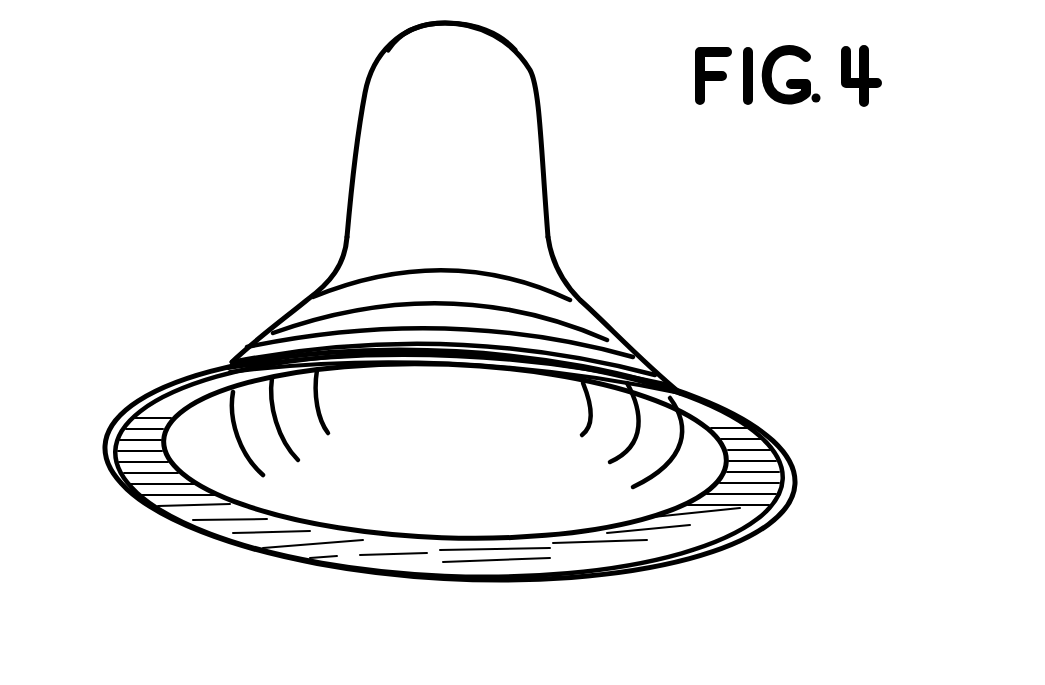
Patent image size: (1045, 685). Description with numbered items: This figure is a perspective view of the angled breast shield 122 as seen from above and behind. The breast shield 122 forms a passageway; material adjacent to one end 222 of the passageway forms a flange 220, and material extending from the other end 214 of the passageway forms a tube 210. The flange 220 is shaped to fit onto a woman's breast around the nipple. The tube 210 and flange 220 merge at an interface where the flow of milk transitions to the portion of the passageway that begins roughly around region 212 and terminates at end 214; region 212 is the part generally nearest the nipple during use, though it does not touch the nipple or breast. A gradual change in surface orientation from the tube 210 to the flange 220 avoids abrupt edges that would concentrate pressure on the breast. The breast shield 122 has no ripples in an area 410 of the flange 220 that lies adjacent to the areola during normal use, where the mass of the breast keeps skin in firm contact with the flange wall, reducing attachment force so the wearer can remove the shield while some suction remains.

The breast shield 122 is at (119, 267).
The tube 210 is at (326, 118).
The end 214 is at (507, 35).
The region 212 is at (590, 264).
The flange 220 is at (820, 577).
The end 222 is at (199, 537).
The area 410 is at (423, 473).